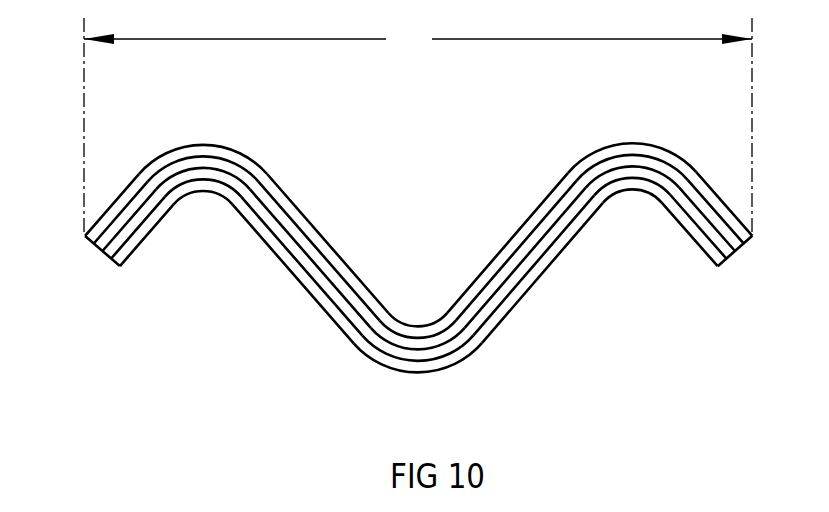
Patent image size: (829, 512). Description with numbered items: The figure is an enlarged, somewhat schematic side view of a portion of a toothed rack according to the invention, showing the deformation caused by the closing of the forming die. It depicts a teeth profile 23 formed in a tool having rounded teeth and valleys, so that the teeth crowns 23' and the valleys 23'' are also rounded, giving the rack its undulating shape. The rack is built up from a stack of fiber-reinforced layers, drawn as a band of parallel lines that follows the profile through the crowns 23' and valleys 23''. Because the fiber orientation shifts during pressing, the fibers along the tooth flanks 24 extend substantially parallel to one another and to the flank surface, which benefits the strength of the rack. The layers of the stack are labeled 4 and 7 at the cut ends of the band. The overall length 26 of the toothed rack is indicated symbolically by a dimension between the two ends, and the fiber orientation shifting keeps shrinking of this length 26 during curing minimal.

The overall length 26 is at (418, 127).
The teeth profile 23 is at (399, 230).
The teeth crowns 23' is at (417, 148).
The valleys 23'' is at (418, 320).
The tooth flanks 24 is at (399, 229).
The intermediate layer 7 is at (117, 208).
The outer layer 4 is at (97, 248).